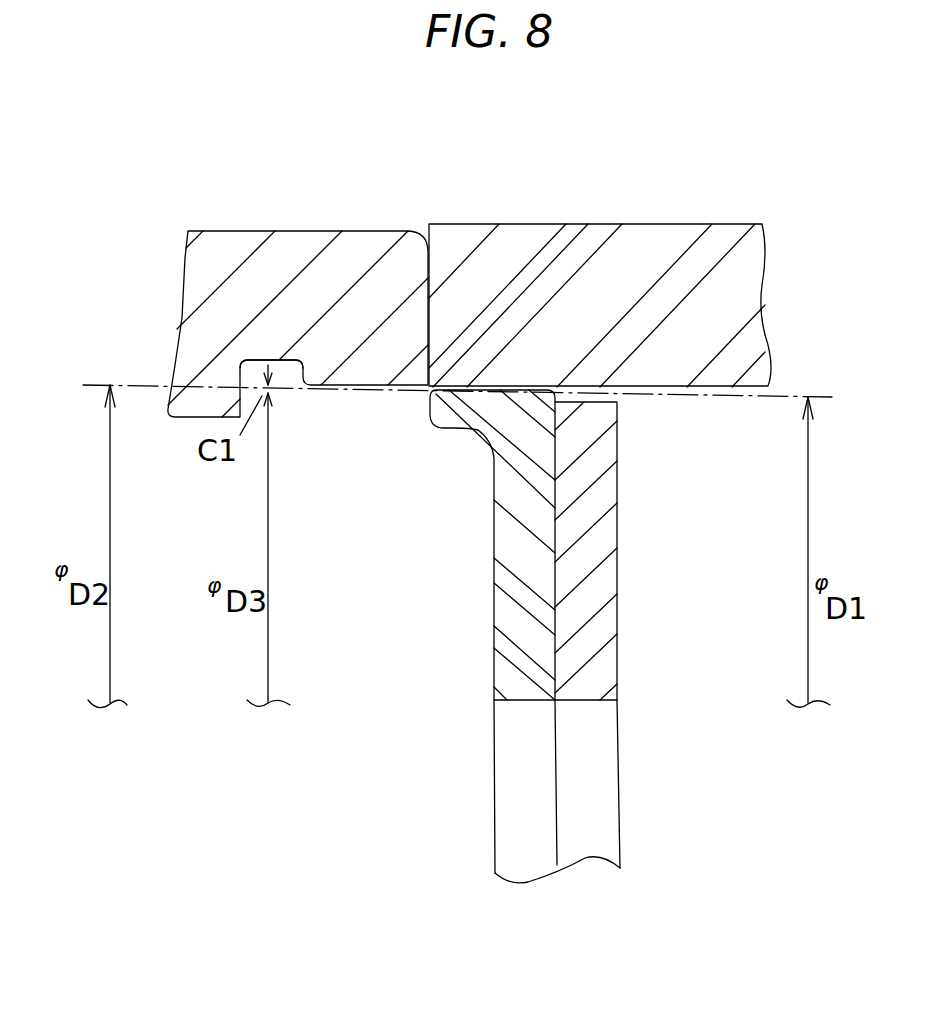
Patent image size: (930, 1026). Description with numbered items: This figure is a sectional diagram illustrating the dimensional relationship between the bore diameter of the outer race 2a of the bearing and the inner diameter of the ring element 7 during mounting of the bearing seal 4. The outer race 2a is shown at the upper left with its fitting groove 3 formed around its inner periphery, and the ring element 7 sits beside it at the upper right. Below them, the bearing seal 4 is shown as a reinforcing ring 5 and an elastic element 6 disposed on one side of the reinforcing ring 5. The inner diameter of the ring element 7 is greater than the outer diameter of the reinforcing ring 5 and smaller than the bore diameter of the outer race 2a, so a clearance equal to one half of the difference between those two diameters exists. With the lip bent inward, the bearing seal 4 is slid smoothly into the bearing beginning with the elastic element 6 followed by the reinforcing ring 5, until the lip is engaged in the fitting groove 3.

The outer race 2a is at (348, 253).
The fitting groove 3 is at (286, 372).
The bearing seal 4 is at (639, 748).
The reinforcing ring 5 is at (607, 578).
The elastic element 6 is at (503, 607).
The ring element 7 is at (530, 247).